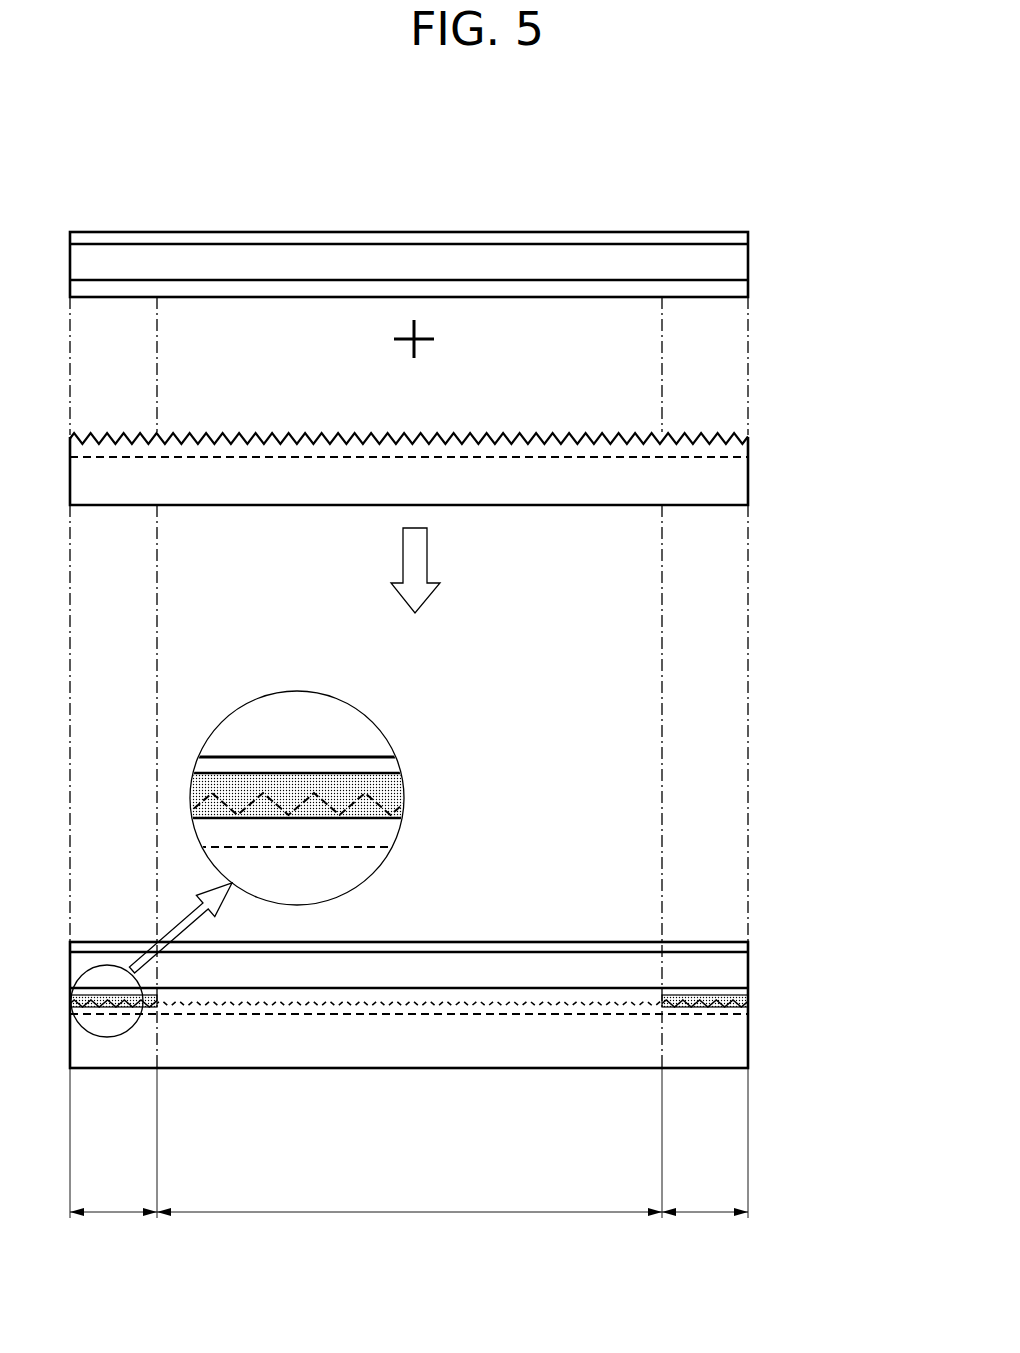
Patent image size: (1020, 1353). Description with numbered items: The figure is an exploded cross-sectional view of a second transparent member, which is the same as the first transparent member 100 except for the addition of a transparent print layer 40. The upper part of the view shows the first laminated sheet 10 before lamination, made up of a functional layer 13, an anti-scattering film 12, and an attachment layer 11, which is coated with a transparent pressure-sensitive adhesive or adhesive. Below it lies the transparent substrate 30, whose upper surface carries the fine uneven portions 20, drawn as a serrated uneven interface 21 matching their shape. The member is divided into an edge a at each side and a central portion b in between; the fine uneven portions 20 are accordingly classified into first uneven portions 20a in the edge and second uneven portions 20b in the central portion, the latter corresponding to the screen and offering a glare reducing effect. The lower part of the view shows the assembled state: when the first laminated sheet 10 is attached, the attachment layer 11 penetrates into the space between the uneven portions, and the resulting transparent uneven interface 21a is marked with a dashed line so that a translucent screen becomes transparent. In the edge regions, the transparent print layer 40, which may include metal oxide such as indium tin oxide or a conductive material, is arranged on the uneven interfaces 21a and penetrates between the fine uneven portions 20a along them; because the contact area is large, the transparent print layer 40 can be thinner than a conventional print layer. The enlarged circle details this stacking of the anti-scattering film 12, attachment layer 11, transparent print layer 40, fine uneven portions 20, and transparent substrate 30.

The first transparent member 100 is at (615, 171).
The first laminated sheet 10 is at (833, 237).
The attachment layer 11 is at (740, 290).
The anti-scattering film 12 is at (738, 265).
The functional layer 13 is at (745, 238).
The fine uneven portions 20 is at (740, 447).
The first uneven portions 20a is at (127, 1003).
The second uneven portions 20b is at (355, 1005).
The uneven interface 21 is at (728, 437).
The transparent uneven interface 21a is at (555, 1003).
The transparent substrate 30 is at (748, 488).
The transparent print layer 40 is at (395, 789).